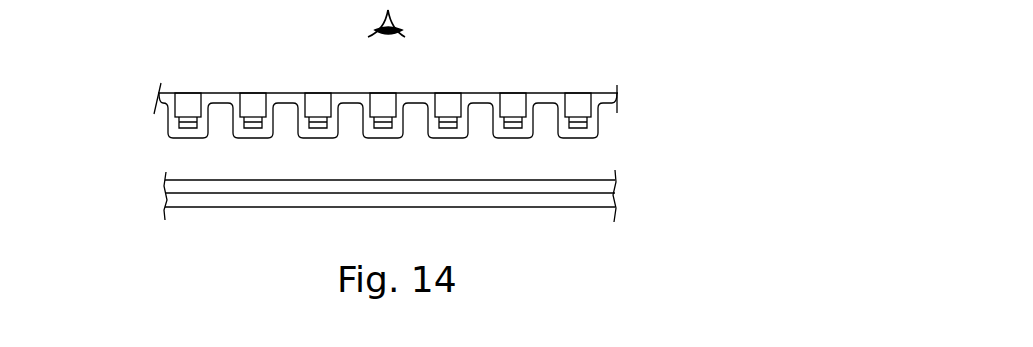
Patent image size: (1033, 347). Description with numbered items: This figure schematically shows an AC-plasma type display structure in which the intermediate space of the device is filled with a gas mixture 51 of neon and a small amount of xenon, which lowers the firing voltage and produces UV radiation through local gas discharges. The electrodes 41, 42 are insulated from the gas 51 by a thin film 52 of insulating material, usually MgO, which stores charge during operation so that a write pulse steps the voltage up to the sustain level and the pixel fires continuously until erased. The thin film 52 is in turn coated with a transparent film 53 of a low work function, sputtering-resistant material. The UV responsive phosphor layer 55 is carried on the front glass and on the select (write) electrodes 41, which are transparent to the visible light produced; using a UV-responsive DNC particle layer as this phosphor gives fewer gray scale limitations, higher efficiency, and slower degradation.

The select (write) electrodes 41 is at (512, 107).
The UV responsive phosphor layer 55 is at (605, 97).
The gas mixture 51 is at (583, 158).
The thin film of insulating material 52 is at (188, 131).
The transparent film 53 is at (167, 187).
The electrodes 42 is at (602, 218).